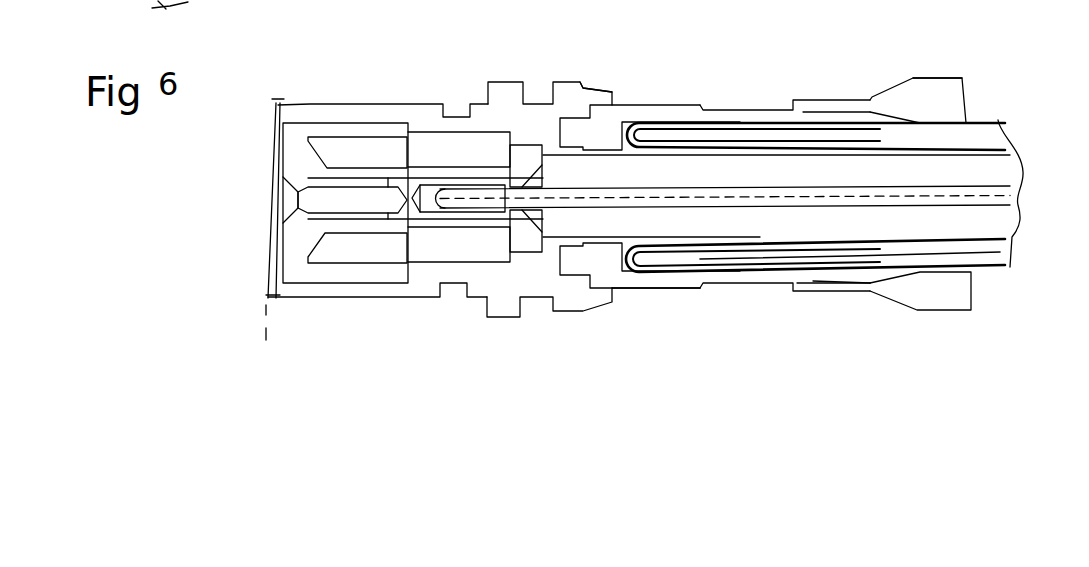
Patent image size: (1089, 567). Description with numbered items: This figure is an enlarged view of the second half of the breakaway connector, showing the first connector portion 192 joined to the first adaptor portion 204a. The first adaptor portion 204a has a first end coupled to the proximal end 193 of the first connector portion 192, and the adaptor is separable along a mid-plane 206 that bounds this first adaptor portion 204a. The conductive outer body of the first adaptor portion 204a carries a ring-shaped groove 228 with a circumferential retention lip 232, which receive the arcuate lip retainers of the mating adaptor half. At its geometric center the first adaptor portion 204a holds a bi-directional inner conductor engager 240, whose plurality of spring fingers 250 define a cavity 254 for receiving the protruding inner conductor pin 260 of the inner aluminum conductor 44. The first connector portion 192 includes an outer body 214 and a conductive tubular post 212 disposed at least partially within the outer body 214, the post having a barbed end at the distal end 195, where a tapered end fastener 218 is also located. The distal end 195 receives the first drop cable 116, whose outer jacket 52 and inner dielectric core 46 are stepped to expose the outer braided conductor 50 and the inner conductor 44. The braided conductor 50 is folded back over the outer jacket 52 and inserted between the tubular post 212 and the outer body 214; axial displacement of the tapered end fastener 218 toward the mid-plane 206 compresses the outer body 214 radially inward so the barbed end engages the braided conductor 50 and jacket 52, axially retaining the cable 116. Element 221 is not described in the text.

The mid-plane 206 is at (278, 90).
The circumferential retention lip 232 is at (417, 96).
The ring-shaped groove 228 is at (424, 102).
The first adaptor portion 204a is at (585, 83).
The conductive tubular post 212 is at (603, 242).
The outer body 214 is at (752, 110).
The tapered end fastener 218 is at (843, 137).
The first drop cable 116 is at (1003, 118).
The outer braided conductor 50 is at (685, 120).
The outer jacket 52 is at (830, 258).
The inner aluminum conductor 44 is at (893, 197).
The inner dielectric core 46 is at (942, 223).
The cavity 254 is at (322, 200).
The protruding inner conductor pin 260 is at (445, 213).
The spring fingers 250 is at (298, 233).
The bi-directional inner conductor engager 240 is at (462, 225).
The proximal end 193 is at (638, 303).
The first connector portion 192 is at (795, 368).
The distal end 195 is at (993, 315).
The end portion 221 is at (858, 39).